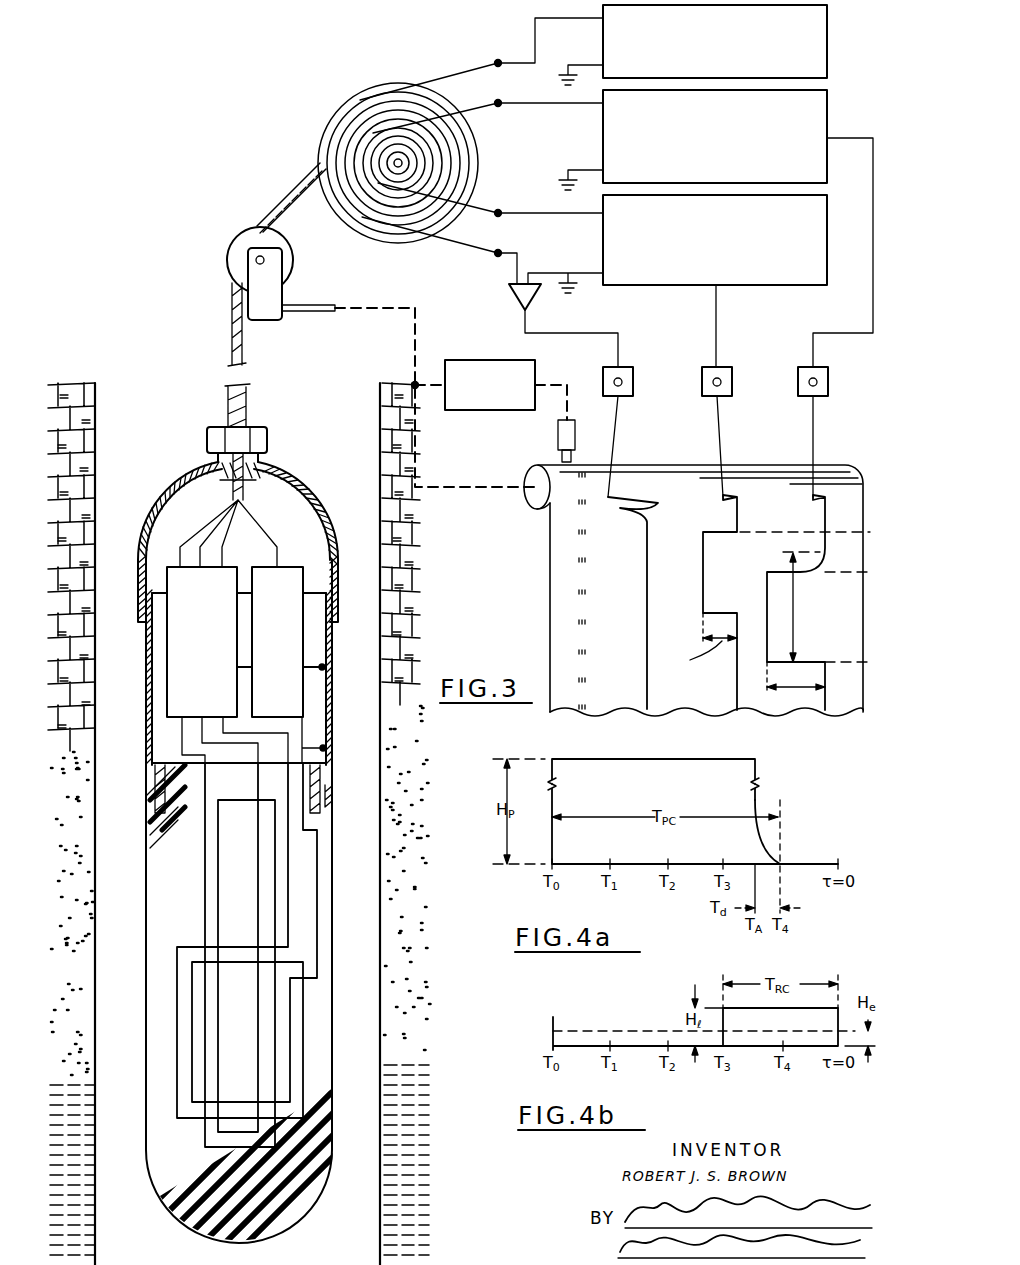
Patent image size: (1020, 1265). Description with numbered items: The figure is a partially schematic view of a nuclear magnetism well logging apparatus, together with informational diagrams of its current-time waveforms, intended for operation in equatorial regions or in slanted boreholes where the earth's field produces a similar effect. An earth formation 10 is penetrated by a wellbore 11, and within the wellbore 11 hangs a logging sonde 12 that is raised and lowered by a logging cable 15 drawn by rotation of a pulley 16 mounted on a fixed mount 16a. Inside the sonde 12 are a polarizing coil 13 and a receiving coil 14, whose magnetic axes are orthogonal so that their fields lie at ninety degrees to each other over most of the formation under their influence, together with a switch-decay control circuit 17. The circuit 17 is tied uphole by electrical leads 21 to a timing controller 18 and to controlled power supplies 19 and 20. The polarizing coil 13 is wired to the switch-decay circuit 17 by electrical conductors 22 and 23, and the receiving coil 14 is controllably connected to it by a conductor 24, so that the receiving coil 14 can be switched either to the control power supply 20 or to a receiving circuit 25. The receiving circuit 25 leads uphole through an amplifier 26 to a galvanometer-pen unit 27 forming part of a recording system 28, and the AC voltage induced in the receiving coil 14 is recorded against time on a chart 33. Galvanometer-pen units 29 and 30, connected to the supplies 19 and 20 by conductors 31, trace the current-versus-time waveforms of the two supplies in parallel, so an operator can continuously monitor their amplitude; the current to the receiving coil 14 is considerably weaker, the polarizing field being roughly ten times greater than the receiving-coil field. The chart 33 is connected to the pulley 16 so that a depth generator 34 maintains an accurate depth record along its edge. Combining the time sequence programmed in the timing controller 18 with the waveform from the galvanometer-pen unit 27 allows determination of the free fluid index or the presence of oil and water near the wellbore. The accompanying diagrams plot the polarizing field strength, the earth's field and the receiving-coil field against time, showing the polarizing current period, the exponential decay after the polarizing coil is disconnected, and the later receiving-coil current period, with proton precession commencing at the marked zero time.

The earth formation 10 is at (427, 921).
The wellbore 11 is at (365, 1014).
The logging sonde 12 is at (308, 1211).
The polarizing coil 13 is at (275, 883).
The receiving coil 14 is at (177, 1045).
The logging cable 15 is at (232, 338).
The pulley 16 is at (235, 242).
The fixed mount 16a is at (272, 322).
The switch-decay control circuit 17 is at (167, 665).
The timing controller 18 is at (830, 40).
The controlled power supply 19 is at (830, 125).
The controlled power supply 20 is at (750, 287).
The electrical leads 21 is at (226, 536).
The electrical conductor 22 is at (180, 743).
The electrical conductor 23 is at (200, 732).
The conductor 24 is at (290, 745).
The receiving circuit 25 is at (296, 566).
The amplifier 26 is at (508, 297).
The galvanometer-pen unit 27 is at (633, 380).
The recording system 28 is at (838, 461).
The galvanometer-pen unit 29 is at (732, 380).
The galvanometer-pen unit 30 is at (828, 380).
The conductors 31 is at (714, 317).
The chart 33 is at (550, 612).
The depth generator 34 is at (487, 358).